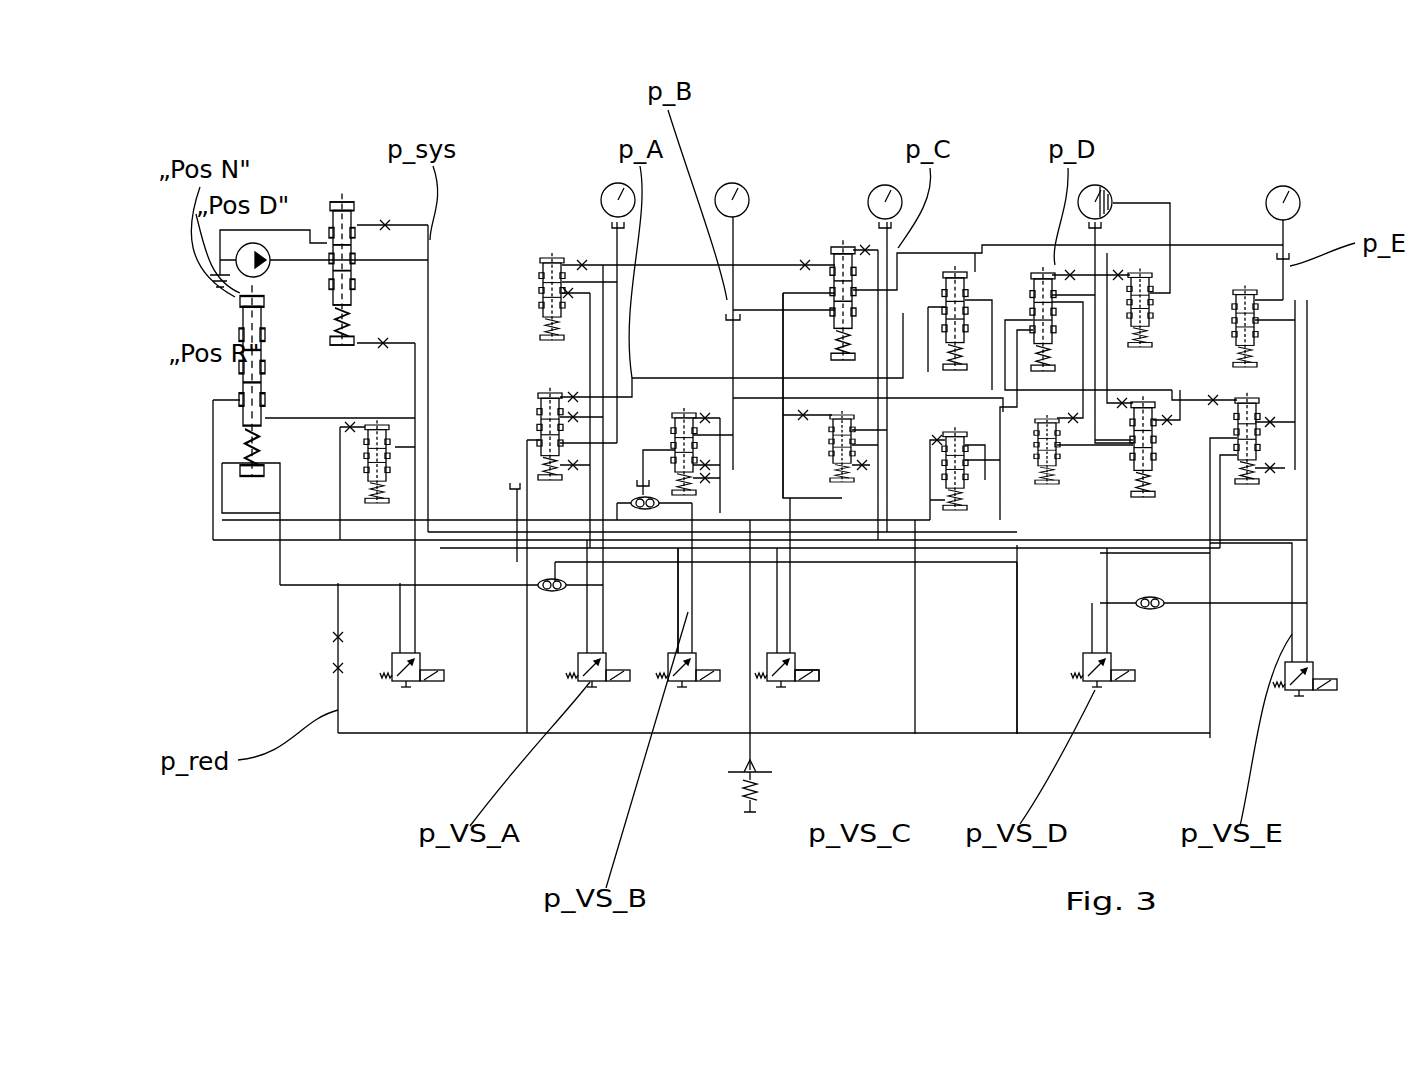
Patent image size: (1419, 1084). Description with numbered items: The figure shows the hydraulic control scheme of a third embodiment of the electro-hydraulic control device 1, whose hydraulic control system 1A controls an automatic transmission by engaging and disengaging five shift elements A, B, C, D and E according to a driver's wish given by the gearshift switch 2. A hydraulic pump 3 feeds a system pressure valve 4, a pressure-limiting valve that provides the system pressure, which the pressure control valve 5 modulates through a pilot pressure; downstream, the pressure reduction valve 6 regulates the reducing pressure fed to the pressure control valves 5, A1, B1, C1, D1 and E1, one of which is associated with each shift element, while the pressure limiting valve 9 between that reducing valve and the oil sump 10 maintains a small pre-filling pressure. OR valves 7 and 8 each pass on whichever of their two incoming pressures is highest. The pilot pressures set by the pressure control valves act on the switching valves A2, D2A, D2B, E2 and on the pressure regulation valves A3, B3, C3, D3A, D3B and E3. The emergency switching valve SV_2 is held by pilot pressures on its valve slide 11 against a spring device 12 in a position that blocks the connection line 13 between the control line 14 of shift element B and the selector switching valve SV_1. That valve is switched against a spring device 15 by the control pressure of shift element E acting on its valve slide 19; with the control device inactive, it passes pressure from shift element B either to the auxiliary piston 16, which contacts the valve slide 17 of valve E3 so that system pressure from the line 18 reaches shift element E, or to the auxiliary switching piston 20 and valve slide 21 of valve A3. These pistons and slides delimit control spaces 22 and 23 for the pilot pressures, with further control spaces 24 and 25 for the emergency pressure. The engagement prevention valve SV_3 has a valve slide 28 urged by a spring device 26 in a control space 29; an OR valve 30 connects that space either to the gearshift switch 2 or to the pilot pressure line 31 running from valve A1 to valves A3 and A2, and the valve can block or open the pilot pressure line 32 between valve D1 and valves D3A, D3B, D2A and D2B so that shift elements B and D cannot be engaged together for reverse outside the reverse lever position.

The electro-hydraulic control device 1 is at (200, 148).
The hydraulic control system 1A is at (380, 146).
The gearshift switch 2 is at (270, 383).
The hydraulic pump 3 is at (258, 248).
The system pressure valve 4 is at (327, 232).
The pressure control valve 5 is at (400, 690).
The pressure reduction valve 6 is at (360, 478).
The OR valve 7 is at (650, 512).
The OR valve 8 is at (1150, 612).
The pressure limiting valve 9 is at (758, 790).
The oil sump 10 is at (748, 802).
The valve slide 11 is at (835, 262).
The spring device 12 is at (838, 345).
The connection line 13 is at (783, 300).
The control line 14 is at (733, 300).
The spring device 15 is at (952, 362).
The auxiliary piston 16 is at (1258, 402).
The valve slide 17 is at (1285, 468).
The line 18 is at (240, 548).
The valve slide 19 is at (968, 288).
The auxiliary switching piston 20 is at (540, 400).
The valve slide 21 is at (520, 447).
The control space 22 is at (530, 425).
The control space 23 is at (1265, 425).
The further control space 24 is at (547, 393).
The further control space 25 is at (1255, 392).
The spring device 26 is at (940, 510).
The valve slide 28 is at (965, 447).
The control space 29 is at (967, 502).
The OR valve 30 is at (548, 598).
The pilot pressure line 31 is at (662, 640).
The pilot pressure line 32 is at (815, 684).
The shift element A is at (613, 198).
The shift element B is at (732, 183).
The shift element C is at (885, 200).
The shift element D is at (1097, 200).
The shift element E is at (1283, 200).
The pressure control valve A1 is at (597, 612).
The switching valve A2 is at (548, 258).
The pressure regulation valve A3 is at (480, 398).
The pressure control valve B1 is at (693, 690).
The pressure regulation valve B3 is at (680, 420).
The pressure control valve C1 is at (780, 690).
The pressure regulation valve C3 is at (845, 485).
The pressure control valve D1 is at (1105, 692).
The switching valve D2A is at (1045, 270).
The switching valve D2B is at (1148, 270).
The pressure regulation valve D3A is at (1047, 488).
The pressure regulation valve D3B is at (1166, 499).
The pressure control valve E1 is at (1300, 698).
The switching valve E2 is at (1238, 288).
The pressure regulating valve E3 is at (1268, 480).